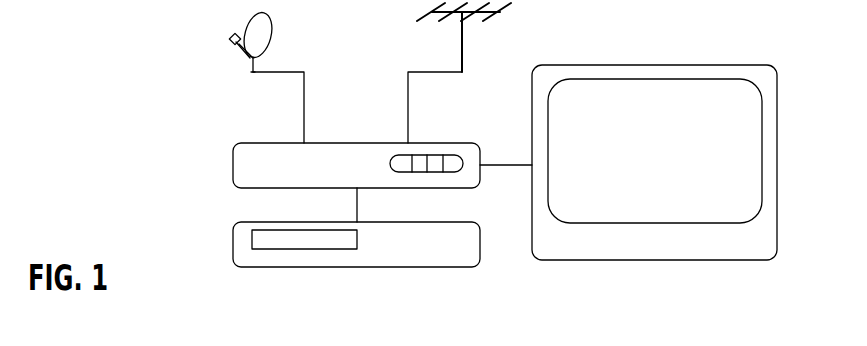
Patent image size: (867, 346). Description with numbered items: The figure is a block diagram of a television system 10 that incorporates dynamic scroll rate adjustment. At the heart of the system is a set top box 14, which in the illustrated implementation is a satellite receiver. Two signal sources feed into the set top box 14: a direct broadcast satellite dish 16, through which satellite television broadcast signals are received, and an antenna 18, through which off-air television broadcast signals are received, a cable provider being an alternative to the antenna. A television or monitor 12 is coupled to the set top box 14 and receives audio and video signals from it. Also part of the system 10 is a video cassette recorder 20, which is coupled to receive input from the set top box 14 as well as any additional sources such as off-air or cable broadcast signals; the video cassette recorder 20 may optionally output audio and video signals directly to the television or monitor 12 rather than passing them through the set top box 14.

The television system 10 is at (153, 100).
The television or monitor 12 is at (687, 64).
The set top box 14 is at (240, 142).
The direct broadcast satellite dish 16 is at (271, 43).
The antenna 18 is at (435, 23).
The video cassette recorder 20 is at (460, 267).